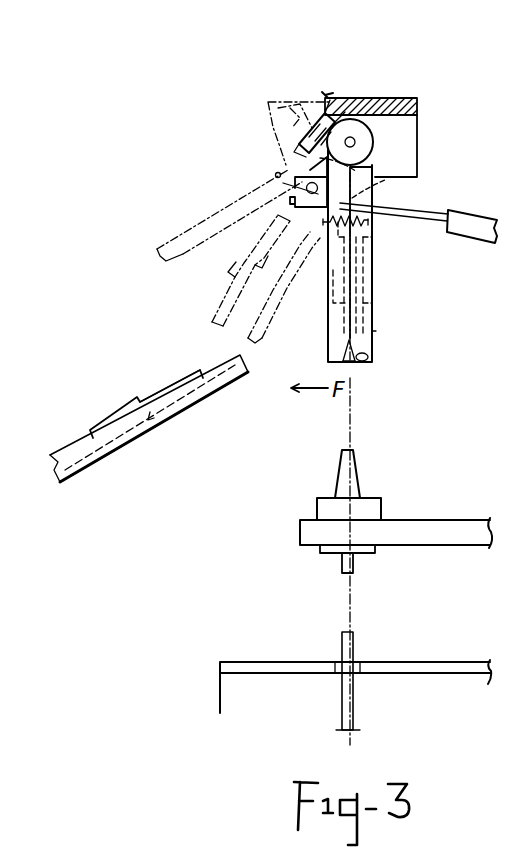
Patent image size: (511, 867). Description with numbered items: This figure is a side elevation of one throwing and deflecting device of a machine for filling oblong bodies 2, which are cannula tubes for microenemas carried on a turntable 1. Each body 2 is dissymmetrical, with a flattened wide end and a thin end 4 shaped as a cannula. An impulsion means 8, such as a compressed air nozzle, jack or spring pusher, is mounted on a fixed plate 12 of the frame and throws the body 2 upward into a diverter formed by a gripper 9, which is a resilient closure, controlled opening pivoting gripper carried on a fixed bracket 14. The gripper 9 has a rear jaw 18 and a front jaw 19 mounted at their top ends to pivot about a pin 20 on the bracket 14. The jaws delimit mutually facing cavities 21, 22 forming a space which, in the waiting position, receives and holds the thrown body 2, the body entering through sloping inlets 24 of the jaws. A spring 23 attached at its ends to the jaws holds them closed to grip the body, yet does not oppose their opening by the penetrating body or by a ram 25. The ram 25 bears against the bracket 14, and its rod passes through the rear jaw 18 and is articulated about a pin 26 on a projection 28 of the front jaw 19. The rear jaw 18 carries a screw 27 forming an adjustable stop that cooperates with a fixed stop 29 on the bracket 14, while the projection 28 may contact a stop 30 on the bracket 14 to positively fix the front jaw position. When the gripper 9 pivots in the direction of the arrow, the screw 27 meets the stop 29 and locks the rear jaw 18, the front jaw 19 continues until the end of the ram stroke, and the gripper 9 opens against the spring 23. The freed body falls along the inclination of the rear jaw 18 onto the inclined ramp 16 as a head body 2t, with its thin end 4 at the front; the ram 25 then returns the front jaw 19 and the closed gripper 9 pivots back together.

The turntable 1 is at (448, 532).
The oblong body 2 is at (260, 235).
The head body 2t is at (169, 385).
The thin end 4 is at (108, 421).
The impulsion means 8 is at (356, 648).
The gripper 9 is at (396, 284).
The fixed plate 12 is at (436, 668).
The fixed bracket 14 is at (432, 131).
The inclined ramp 16 is at (139, 426).
The rear jaw 18 is at (372, 331).
The front jaw 19 is at (192, 225).
The pin 20 is at (353, 140).
The cavity 21 is at (372, 288).
The cavity 22 is at (329, 299).
The spring 23 is at (360, 226).
The sloping inlets 24 is at (347, 362).
The ram 25 is at (473, 223).
The pin 26 is at (368, 177).
The screw 27 is at (304, 137).
The projection 28 is at (297, 185).
The fixed stop 29 is at (327, 99).
The stop 30 is at (292, 100).